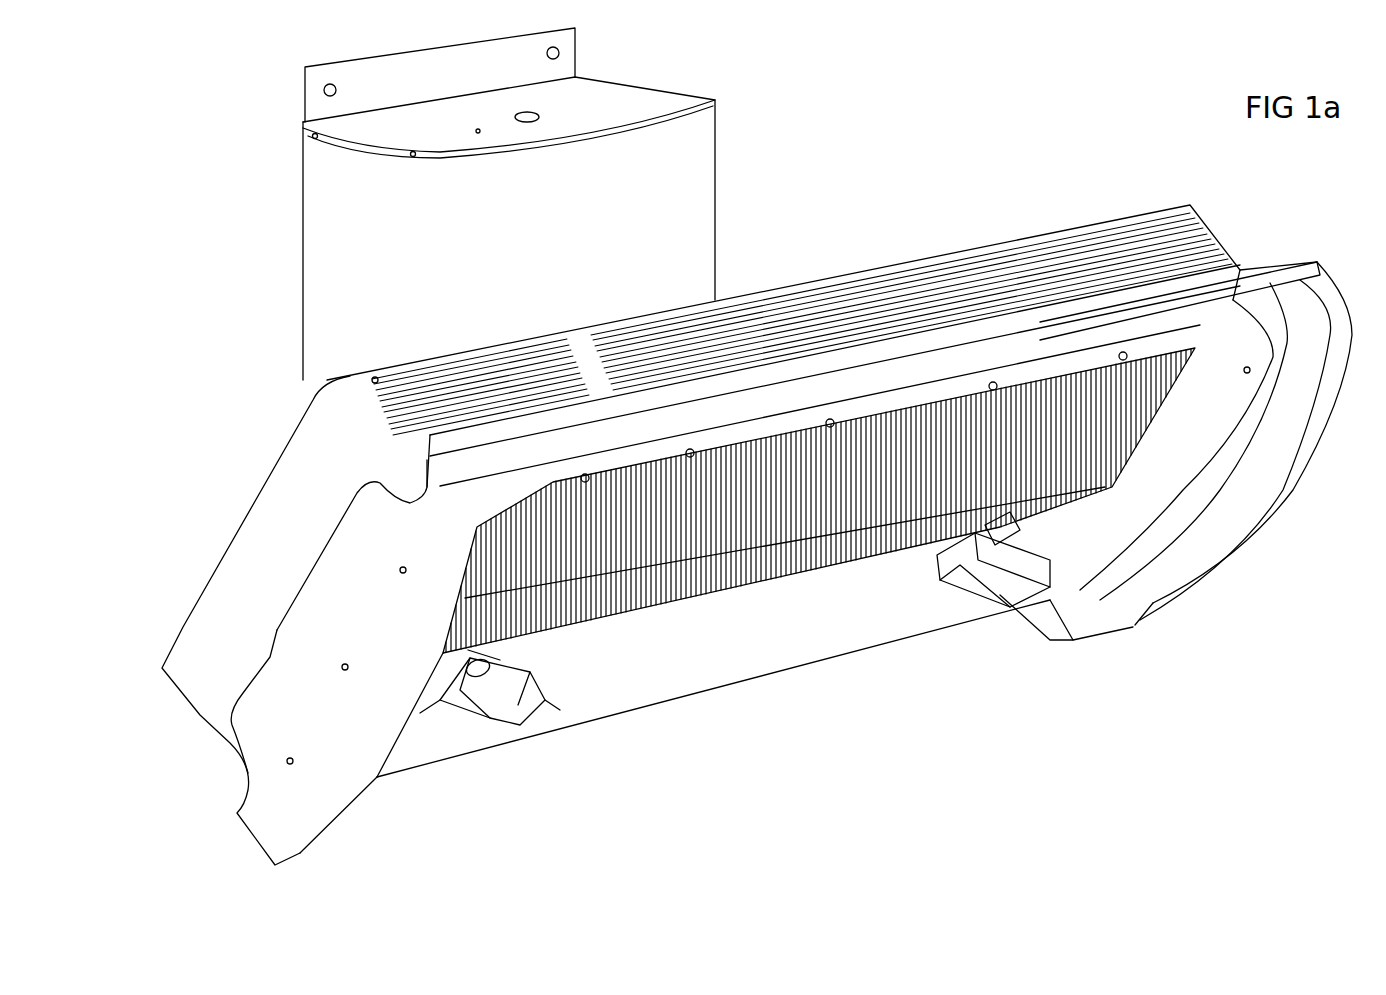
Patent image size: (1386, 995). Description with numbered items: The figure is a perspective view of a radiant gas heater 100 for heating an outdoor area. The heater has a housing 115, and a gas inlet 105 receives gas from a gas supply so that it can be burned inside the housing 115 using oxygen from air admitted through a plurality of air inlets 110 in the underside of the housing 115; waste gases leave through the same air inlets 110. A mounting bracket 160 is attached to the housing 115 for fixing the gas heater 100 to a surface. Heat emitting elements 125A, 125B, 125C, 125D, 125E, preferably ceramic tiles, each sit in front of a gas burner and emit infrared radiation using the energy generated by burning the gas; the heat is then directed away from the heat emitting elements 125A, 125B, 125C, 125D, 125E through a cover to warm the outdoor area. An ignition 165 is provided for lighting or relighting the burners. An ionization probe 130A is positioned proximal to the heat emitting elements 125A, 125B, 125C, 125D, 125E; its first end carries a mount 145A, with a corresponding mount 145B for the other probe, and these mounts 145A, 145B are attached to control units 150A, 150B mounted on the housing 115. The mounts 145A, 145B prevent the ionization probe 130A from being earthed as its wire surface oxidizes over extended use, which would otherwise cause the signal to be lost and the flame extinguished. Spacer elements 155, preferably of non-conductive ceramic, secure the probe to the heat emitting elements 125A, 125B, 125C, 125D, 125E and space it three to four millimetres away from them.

The radiant gas heater 100 is at (170, 198).
The gas inlet 105 is at (225, 844).
The air inlets 110 is at (750, 700).
The housing 115 is at (305, 462).
The heat emitting element 125A is at (585, 475).
The heat emitting element 125B is at (690, 450).
The heat emitting element 125C is at (830, 420).
The heat emitting element 125D is at (993, 383).
The heat emitting element 125E is at (1123, 353).
The ionization probe 130A is at (627, 577).
The mount 145A is at (503, 653).
The mount 145B is at (1000, 532).
The control unit 150A is at (487, 703).
The control unit 150B is at (1002, 573).
The spacer elements 155 is at (925, 433).
The mounting bracket 160 is at (632, 101).
The ignition 165 is at (1030, 528).